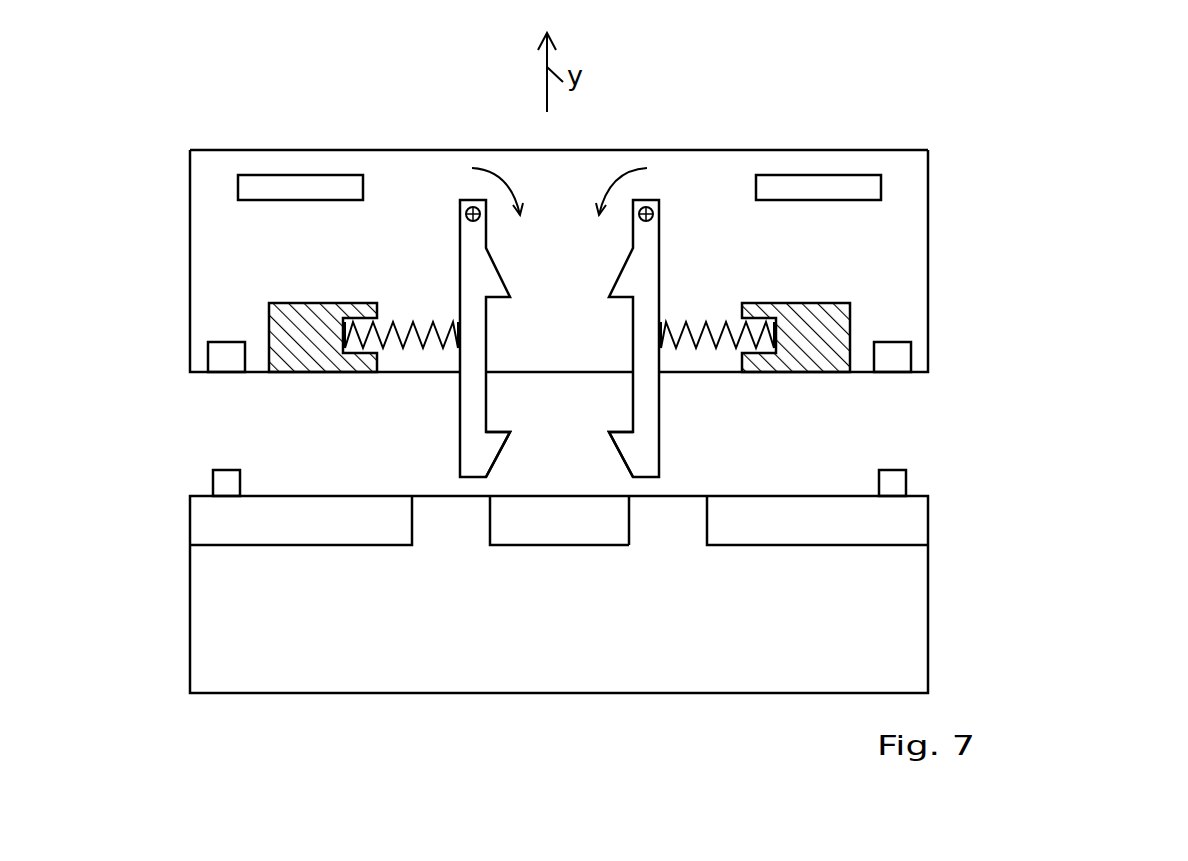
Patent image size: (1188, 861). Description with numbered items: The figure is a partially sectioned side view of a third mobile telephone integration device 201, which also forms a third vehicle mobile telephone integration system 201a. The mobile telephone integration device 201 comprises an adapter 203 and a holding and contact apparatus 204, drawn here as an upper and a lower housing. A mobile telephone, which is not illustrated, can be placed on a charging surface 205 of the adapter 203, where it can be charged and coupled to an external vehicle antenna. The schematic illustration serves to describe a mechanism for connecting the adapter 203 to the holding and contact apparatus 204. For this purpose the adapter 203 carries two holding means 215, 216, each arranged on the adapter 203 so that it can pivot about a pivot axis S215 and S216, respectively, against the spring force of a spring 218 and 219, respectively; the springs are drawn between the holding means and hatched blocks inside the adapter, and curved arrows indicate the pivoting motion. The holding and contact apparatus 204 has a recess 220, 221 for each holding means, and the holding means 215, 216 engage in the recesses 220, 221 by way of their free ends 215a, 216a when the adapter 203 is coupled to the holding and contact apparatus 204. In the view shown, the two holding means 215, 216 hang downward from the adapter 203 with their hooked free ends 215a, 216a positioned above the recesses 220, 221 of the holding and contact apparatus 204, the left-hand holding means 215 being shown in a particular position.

The third mobile telephone integration device 201 is at (968, 107).
The third vehicle mobile telephone integration system 201a is at (557, 399).
The adapter 203 is at (878, 225).
The holding and contact apparatus 204 is at (882, 593).
The charging surface 205 is at (838, 150).
The holding means 215 is at (472, 282).
The holding means 216 is at (647, 282).
The pivot axis S215 is at (470, 208).
The pivot axis S216 is at (648, 208).
The free end 215a is at (477, 453).
The free end 216a is at (642, 450).
The spring 218 is at (414, 330).
The spring 219 is at (703, 330).
The recess 220 is at (452, 520).
The recess 221 is at (667, 524).